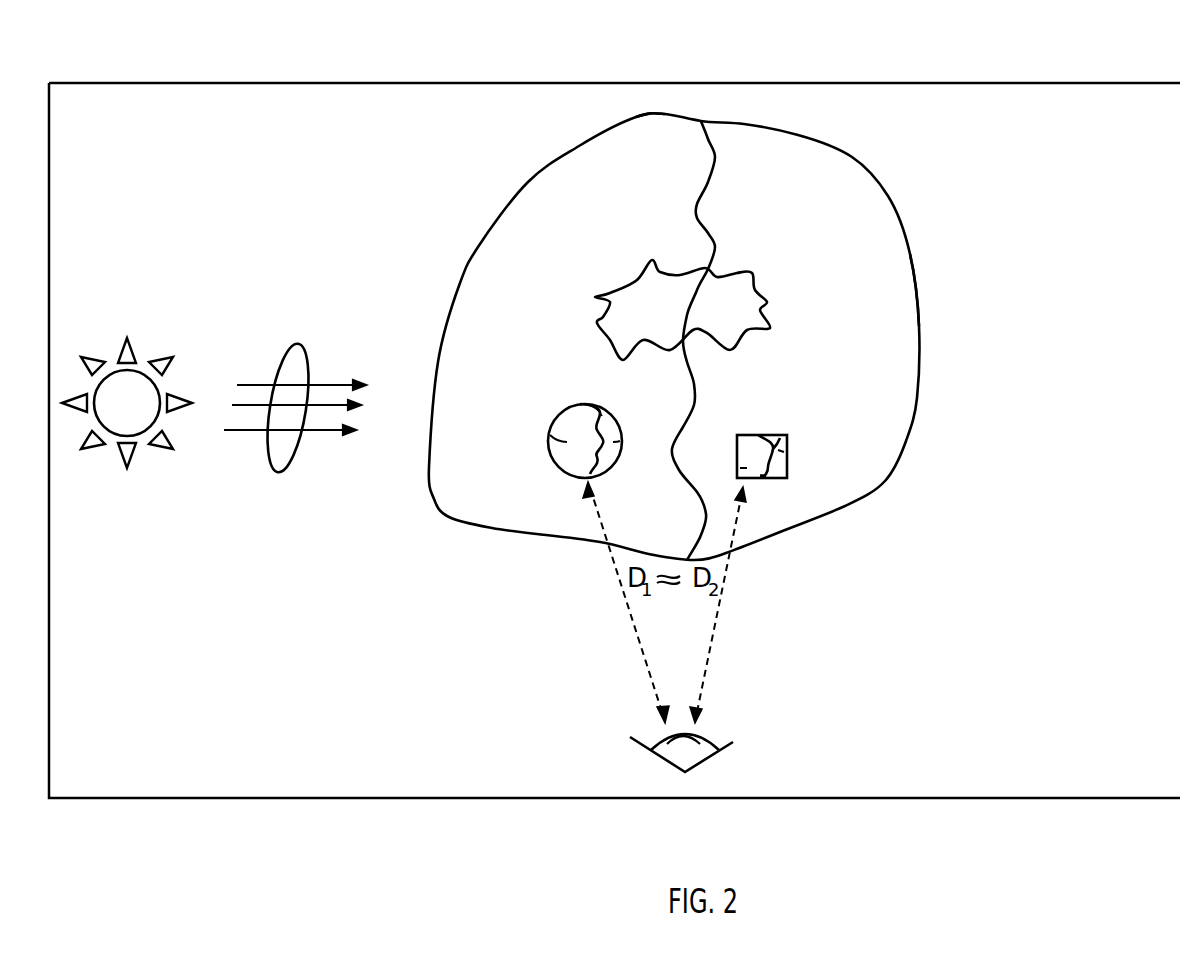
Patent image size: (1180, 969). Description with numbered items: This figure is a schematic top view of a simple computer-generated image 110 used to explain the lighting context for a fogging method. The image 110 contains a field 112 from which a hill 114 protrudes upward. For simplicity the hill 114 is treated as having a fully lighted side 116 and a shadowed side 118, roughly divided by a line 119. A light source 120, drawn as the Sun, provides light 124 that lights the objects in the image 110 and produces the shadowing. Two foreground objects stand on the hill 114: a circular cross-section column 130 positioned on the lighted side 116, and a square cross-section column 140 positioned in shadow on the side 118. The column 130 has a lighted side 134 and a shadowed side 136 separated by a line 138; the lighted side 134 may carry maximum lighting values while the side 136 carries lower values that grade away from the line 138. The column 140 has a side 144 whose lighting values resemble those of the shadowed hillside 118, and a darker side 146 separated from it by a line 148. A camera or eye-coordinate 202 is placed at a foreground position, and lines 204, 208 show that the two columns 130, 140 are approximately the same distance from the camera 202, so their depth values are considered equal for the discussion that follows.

The computer-generated image 110 is at (1040, 83).
The field 112 is at (1057, 668).
The hill 114 is at (478, 247).
The lighted side 116 is at (580, 167).
The shadowed side 118 is at (887, 240).
The dividing line 119 is at (700, 190).
The light source 120 is at (143, 328).
The light 124 is at (277, 472).
The circular cross-section column 130 is at (581, 445).
The lighted side of column 134 is at (550, 435).
The shadowed side of column 136 is at (613, 442).
The dividing line on column 138 is at (582, 404).
The square cross-section column 140 is at (764, 462).
The lighted side of square column 144 is at (740, 468).
The shadowed side of square column 146 is at (778, 450).
The dividing line on square column 148 is at (760, 435).
The camera 202 is at (717, 753).
The distance line 204 is at (640, 645).
The distance line 208 is at (712, 647).